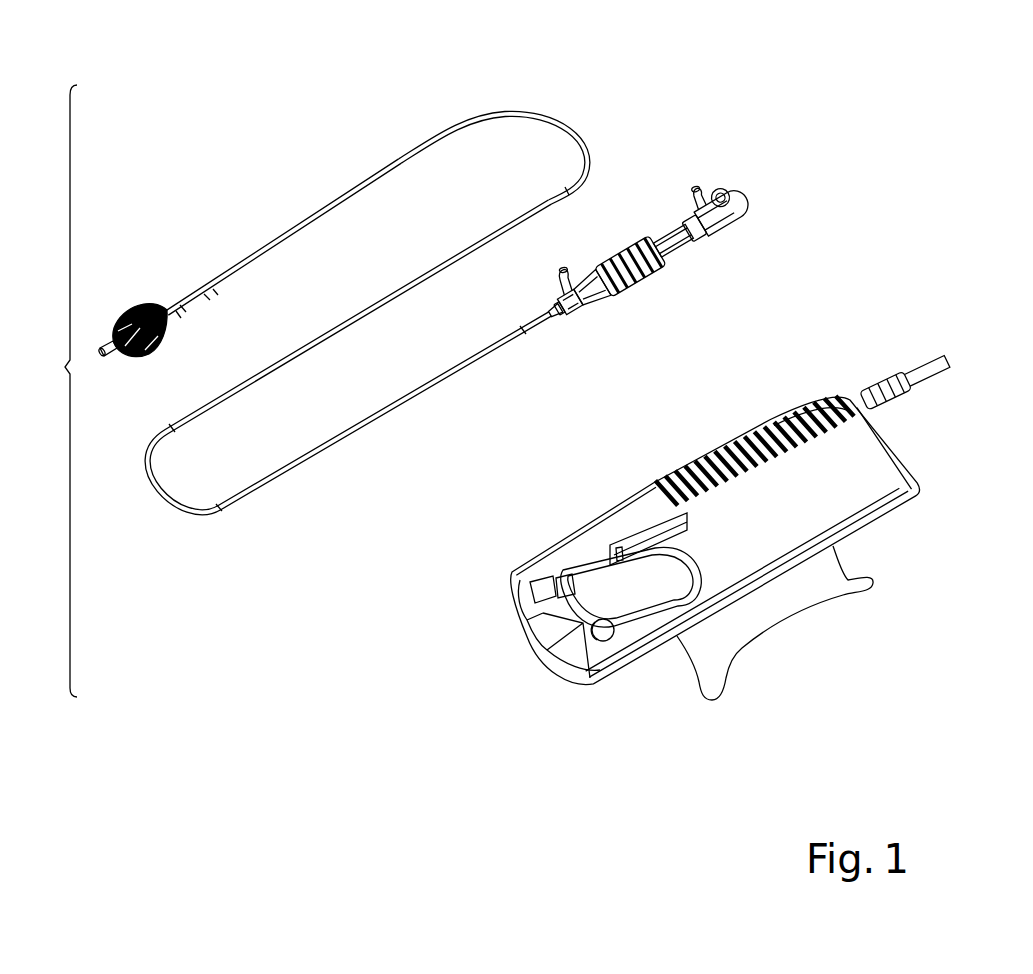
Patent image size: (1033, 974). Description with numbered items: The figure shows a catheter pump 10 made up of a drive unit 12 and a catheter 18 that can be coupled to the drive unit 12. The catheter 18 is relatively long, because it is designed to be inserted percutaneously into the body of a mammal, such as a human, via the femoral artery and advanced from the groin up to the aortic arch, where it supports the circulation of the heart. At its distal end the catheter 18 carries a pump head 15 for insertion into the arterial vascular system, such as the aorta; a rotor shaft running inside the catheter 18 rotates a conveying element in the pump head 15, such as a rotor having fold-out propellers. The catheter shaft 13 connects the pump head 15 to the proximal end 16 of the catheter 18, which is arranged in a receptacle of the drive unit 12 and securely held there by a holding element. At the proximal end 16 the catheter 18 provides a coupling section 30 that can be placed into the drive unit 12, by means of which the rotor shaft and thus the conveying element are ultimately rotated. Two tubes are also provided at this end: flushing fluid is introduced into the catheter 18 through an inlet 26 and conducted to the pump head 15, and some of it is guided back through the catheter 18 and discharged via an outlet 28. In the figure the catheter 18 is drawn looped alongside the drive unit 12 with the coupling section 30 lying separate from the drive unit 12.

The catheter pump 10 is at (53, 391).
The drive unit 12 is at (799, 631).
The catheter shaft 13 is at (432, 407).
The pump head 15 is at (131, 287).
The proximal end 16 is at (679, 237).
The catheter 18 is at (455, 105).
The inlet 26 is at (698, 197).
The outlet 28 is at (720, 197).
The coupling section 30 is at (642, 247).